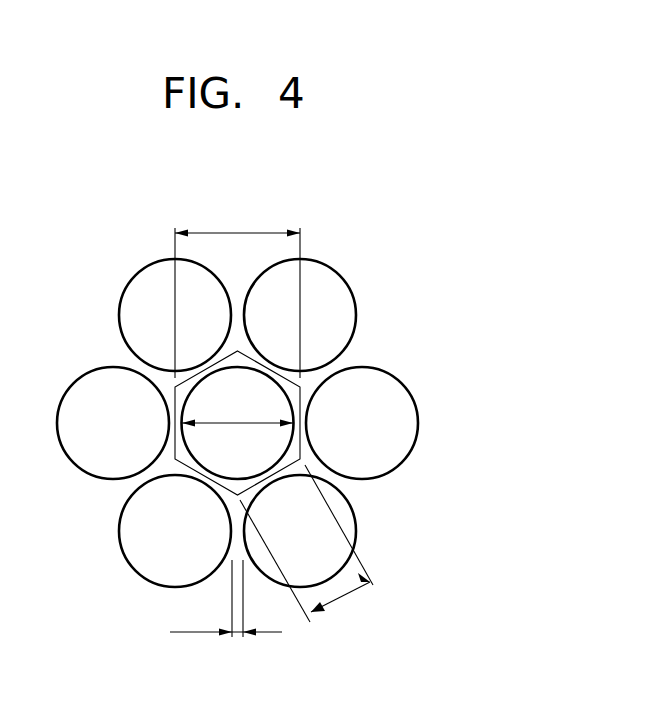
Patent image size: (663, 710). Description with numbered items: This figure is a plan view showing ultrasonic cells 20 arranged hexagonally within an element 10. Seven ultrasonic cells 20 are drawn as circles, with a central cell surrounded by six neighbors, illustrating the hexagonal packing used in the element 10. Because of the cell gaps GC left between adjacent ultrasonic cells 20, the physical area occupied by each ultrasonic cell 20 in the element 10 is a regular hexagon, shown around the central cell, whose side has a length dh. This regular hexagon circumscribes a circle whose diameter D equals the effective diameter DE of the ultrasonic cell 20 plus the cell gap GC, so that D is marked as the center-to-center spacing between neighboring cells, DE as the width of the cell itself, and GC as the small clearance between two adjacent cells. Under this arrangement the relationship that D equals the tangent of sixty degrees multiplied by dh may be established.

The element 10 is at (437, 260).
The ultrasonic cell 20 is at (140, 293).
The diameter D is at (237, 292).
The effective diameter DE is at (237, 410).
The cell gap GC is at (226, 598).
The side length of regular hexagon dh is at (306, 546).